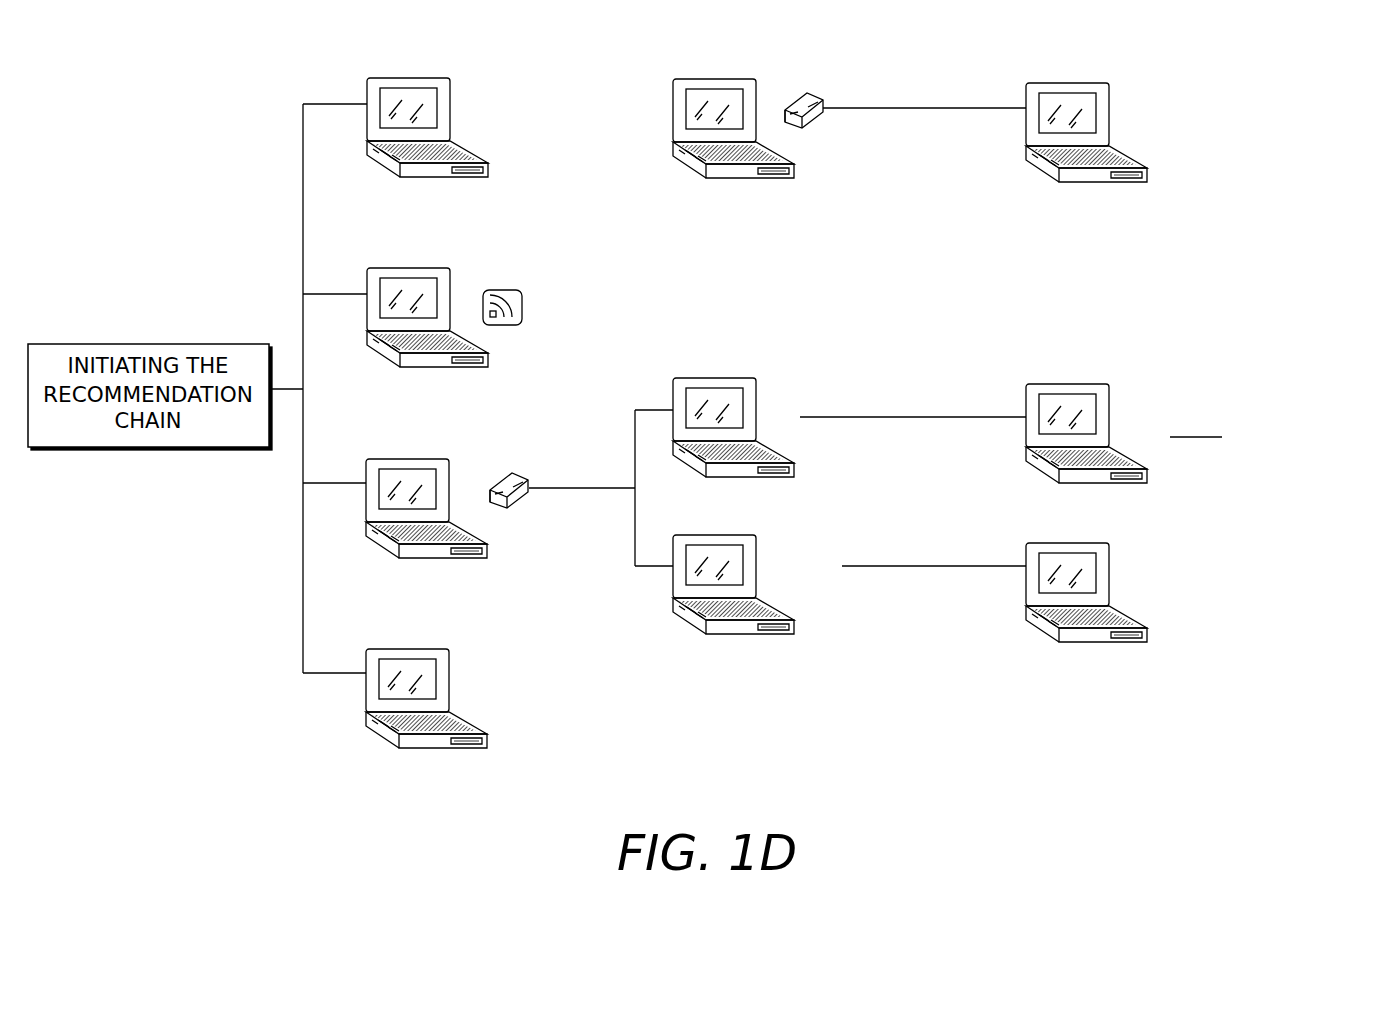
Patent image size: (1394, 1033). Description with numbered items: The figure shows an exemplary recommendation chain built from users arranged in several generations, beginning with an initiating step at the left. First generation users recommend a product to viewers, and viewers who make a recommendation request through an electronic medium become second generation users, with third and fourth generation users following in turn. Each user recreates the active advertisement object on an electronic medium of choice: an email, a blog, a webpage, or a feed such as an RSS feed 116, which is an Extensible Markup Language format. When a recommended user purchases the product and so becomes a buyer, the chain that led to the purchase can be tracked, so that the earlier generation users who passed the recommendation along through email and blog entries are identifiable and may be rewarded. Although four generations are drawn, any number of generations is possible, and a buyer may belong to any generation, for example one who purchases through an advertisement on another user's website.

The RSS feed 116 is at (506, 290).